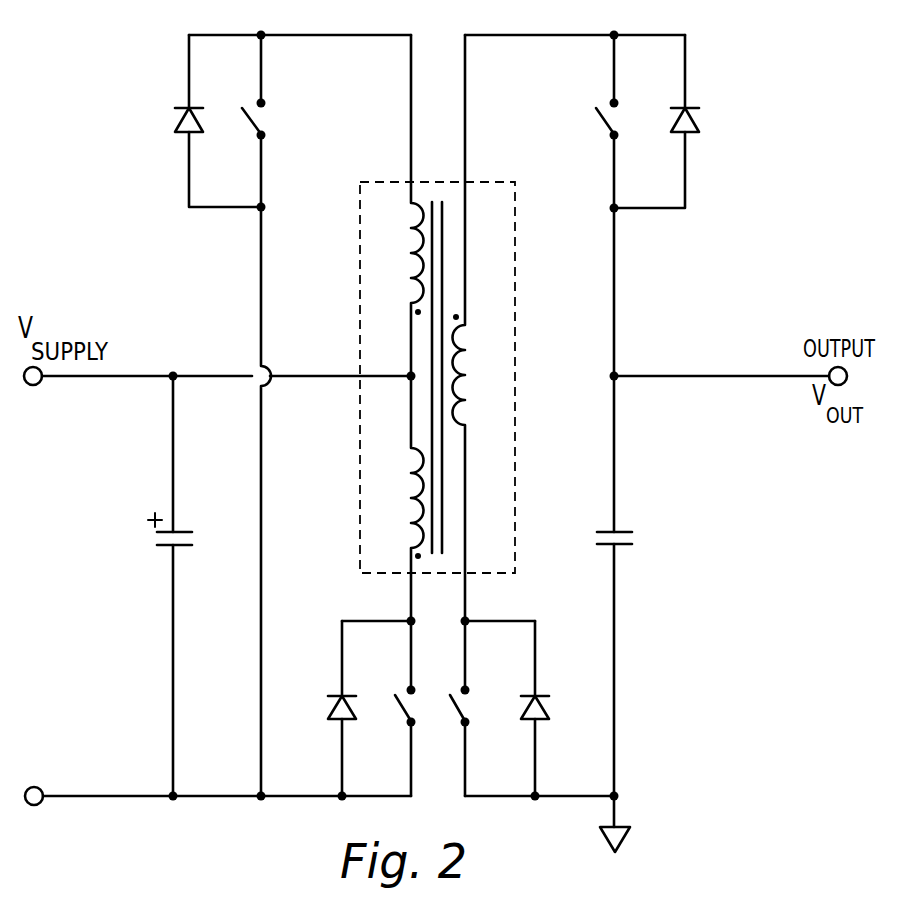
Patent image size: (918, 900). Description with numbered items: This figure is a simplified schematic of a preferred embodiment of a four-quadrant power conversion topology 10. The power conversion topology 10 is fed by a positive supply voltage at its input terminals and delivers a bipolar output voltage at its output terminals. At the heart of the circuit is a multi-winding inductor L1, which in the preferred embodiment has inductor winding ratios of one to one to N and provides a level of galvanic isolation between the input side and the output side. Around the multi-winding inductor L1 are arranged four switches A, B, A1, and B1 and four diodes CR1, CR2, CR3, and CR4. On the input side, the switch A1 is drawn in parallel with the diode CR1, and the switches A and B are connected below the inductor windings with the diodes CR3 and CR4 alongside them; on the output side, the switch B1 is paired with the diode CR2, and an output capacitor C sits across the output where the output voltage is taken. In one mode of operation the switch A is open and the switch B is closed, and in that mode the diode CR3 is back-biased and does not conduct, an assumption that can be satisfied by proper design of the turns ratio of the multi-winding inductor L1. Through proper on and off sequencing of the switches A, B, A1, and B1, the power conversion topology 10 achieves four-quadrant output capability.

The power conversion topology 10 is at (749, 83).
The diode CR1 is at (194, 121).
The switch A1 is at (272, 121).
The switch B1 is at (589, 204).
The diode CR2 is at (679, 121).
The multi-winding inductor L1 is at (515, 285).
The switch A is at (394, 707).
The switch B is at (478, 707).
The diode CR3 is at (346, 711).
The diode CR4 is at (530, 711).
The output capacitor C is at (625, 612).